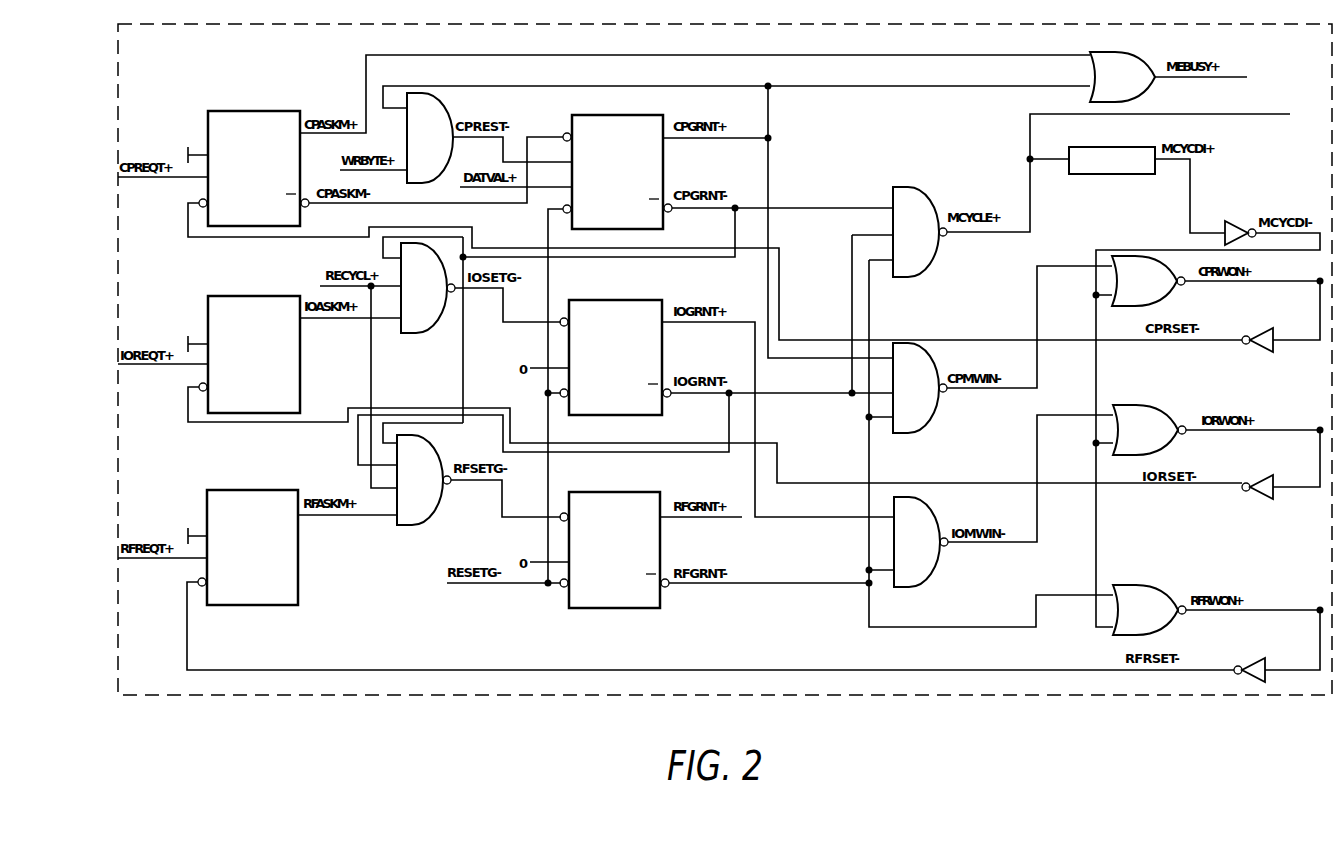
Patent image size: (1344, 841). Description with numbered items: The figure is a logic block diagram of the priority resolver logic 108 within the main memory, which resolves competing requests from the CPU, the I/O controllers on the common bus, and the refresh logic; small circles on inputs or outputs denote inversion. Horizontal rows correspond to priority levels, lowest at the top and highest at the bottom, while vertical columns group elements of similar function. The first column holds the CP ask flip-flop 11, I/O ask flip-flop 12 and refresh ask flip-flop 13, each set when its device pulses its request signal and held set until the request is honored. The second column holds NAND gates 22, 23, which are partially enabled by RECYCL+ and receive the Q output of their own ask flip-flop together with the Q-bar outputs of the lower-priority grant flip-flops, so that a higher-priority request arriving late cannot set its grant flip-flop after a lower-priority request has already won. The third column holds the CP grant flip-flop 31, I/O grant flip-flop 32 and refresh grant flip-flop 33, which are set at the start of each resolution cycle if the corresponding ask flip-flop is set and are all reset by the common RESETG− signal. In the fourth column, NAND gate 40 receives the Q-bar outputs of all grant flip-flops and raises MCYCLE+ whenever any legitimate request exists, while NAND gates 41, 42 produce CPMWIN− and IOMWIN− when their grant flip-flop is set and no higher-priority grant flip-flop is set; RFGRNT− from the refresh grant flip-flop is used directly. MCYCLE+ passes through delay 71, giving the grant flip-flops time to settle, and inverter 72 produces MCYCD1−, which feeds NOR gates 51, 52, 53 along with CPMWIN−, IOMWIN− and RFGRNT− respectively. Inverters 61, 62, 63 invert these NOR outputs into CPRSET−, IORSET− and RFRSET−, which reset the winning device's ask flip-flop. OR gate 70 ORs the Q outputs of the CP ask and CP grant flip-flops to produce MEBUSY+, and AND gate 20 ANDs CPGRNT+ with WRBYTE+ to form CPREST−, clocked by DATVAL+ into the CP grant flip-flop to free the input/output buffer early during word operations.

The CP ask flip-flop 11 is at (275, 111).
The I/O ask flip-flop 12 is at (262, 297).
The refresh ask flip-flop 13 is at (257, 492).
The AND gate 20 is at (443, 107).
The NAND gate 22 is at (421, 325).
The NAND gate 23 is at (430, 452).
The CP grant flip-flop 31 is at (630, 115).
The I/O grant flip-flop 32 is at (627, 302).
The refresh grant flip-flop 33 is at (627, 493).
The NAND gate 40 is at (929, 204).
The NAND gate 41 is at (937, 359).
The NAND gate 42 is at (931, 515).
The NOR gate 51 is at (1170, 296).
The NOR gate 52 is at (1148, 404).
The NOR gate 53 is at (1143, 584).
The inverter 61 is at (1262, 328).
The inverter 62 is at (1268, 478).
The inverter 63 is at (1256, 660).
The OR gate 70 is at (1147, 86).
The delay 71 is at (1126, 147).
The inverter 72 is at (1240, 222).
The priority resolver logic 108 is at (190, 702).